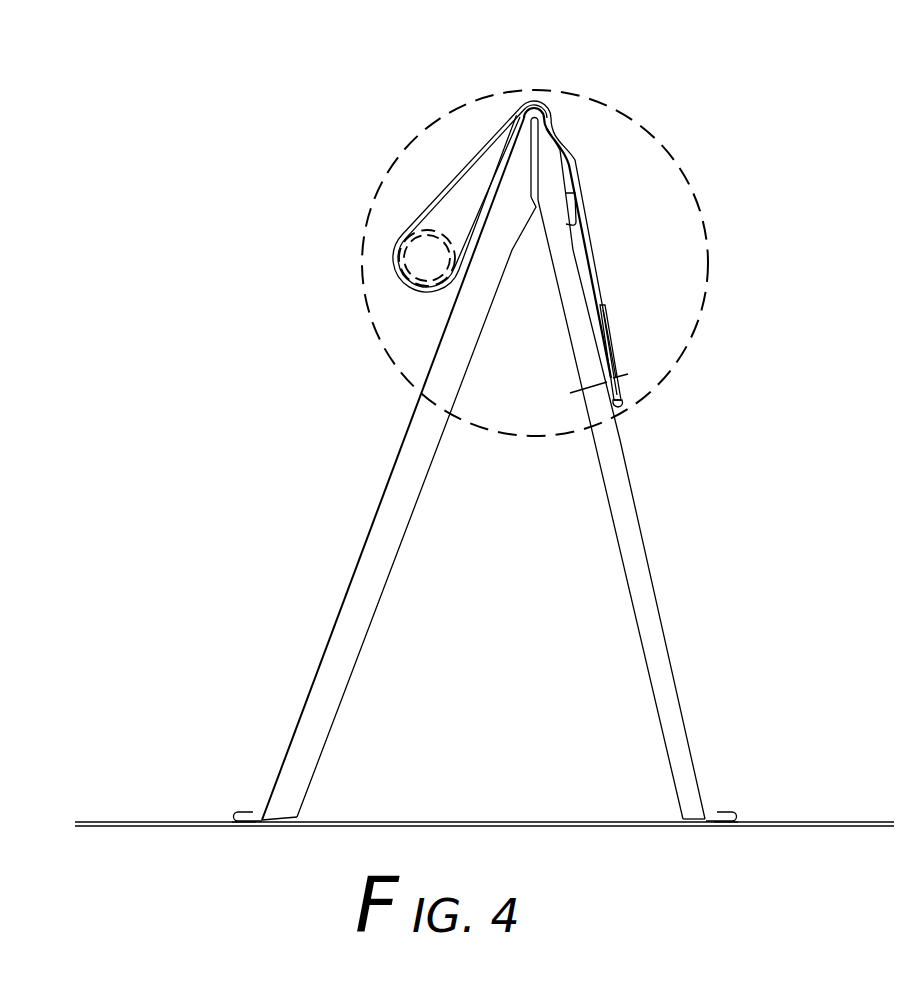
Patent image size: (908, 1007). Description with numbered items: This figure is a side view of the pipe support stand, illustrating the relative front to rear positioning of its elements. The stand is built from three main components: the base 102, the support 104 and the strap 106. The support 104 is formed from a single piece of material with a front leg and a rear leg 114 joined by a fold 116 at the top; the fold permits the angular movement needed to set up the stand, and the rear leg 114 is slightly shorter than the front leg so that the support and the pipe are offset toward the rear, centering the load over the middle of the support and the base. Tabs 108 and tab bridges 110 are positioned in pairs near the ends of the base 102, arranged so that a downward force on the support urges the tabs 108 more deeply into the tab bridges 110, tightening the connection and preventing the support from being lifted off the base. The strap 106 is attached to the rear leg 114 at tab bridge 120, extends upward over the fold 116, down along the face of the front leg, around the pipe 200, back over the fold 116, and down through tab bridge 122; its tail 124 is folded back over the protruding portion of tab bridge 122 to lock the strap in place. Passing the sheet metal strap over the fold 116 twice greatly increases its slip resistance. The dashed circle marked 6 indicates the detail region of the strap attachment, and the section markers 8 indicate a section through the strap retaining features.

The base 102 is at (565, 826).
The support 104 is at (329, 598).
The strap 106 is at (475, 145).
The tabs 108 is at (235, 798).
The tab bridges 110 is at (234, 837).
The rear leg 114 is at (662, 570).
The fold 116 is at (543, 104).
The tab bridge 120 is at (581, 185).
The tab bridge 122 is at (623, 402).
The tail 124 is at (618, 314).
The pipe 200 is at (389, 235).
The detail circle for FIG. 6 is at (367, 320).
The section line 8- 8 is at (595, 381).